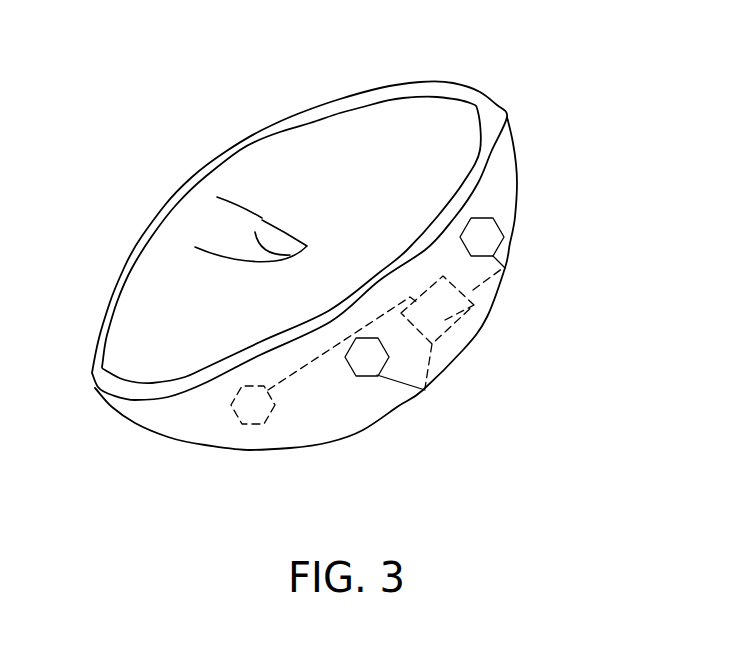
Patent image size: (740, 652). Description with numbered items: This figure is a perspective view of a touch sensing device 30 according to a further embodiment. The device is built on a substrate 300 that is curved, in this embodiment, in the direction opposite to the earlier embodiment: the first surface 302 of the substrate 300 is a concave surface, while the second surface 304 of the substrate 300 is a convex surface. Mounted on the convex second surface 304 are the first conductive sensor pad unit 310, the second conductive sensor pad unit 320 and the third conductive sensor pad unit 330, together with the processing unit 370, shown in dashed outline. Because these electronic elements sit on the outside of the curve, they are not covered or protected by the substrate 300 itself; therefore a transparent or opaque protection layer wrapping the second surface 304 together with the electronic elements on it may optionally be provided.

The touch sensing device 30 is at (506, 483).
The substrate 300 is at (500, 182).
The first surface 302 is at (410, 104).
The second surface 304 is at (511, 106).
The first conductive sensor pad unit 310 is at (250, 427).
The second conductive sensor pad unit 320 is at (360, 368).
The third conductive sensor pad unit 330 is at (487, 225).
The processing unit 370 is at (483, 322).